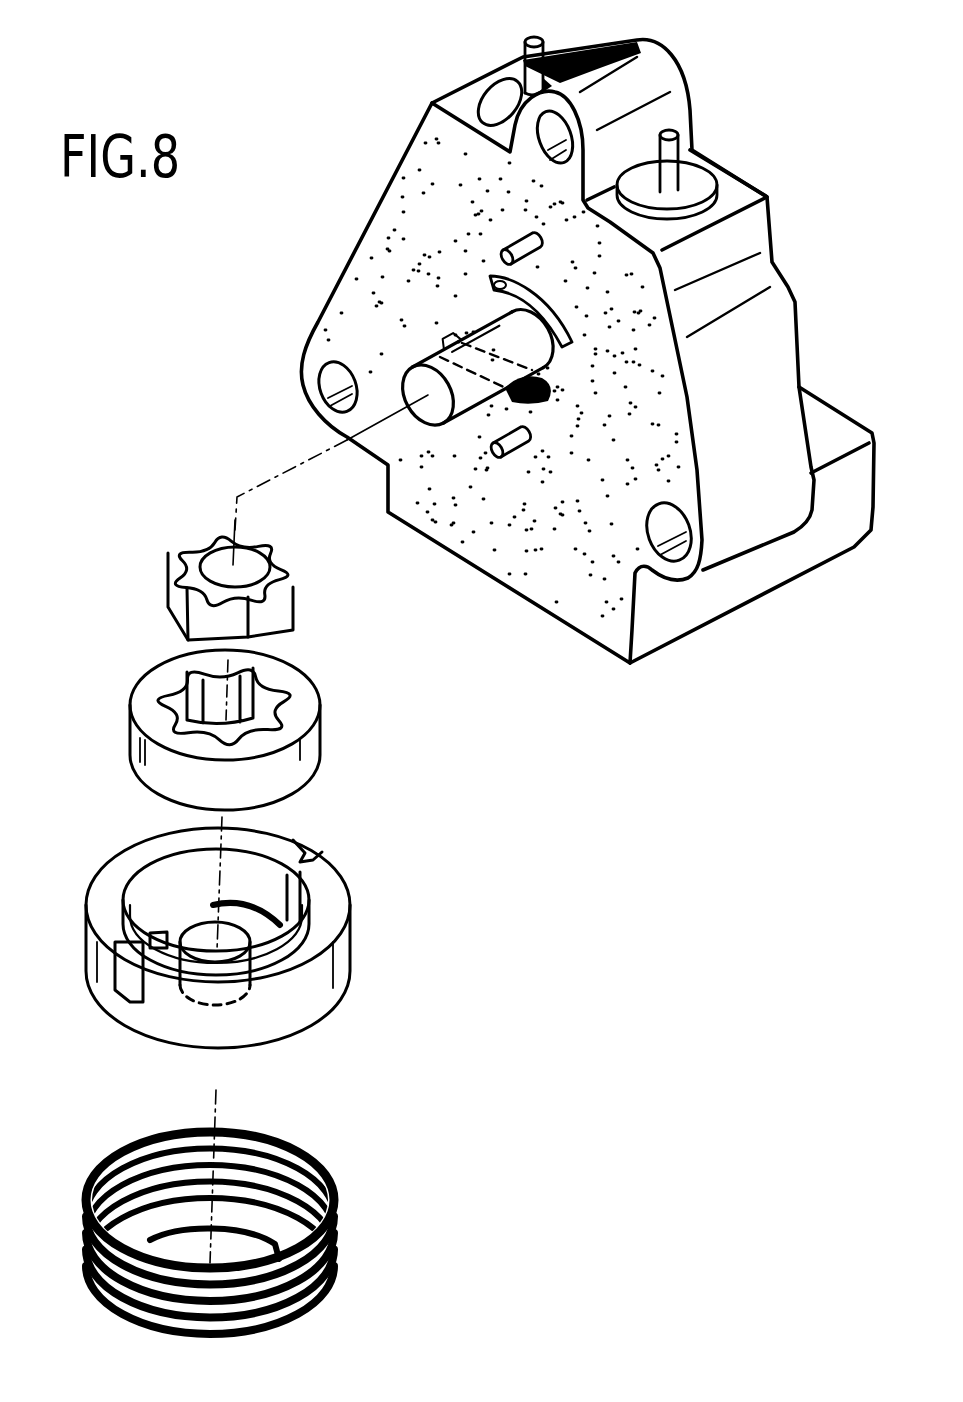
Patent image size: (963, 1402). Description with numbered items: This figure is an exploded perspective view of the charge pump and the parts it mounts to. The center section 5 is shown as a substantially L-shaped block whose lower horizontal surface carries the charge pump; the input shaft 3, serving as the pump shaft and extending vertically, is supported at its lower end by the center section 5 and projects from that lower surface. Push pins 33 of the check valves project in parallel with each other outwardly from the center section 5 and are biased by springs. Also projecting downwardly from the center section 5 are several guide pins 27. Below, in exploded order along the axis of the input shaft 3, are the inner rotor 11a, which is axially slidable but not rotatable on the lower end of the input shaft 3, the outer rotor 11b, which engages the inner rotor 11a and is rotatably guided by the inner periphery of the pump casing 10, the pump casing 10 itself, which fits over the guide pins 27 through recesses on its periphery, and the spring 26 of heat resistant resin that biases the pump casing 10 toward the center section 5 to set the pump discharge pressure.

The input shaft 3 is at (428, 395).
The center section 5 is at (700, 610).
The pump casing 10 is at (350, 950).
The inner rotor 11a is at (285, 600).
The outer rotor 11b is at (317, 738).
The spring 26 is at (330, 1190).
The guide pins 27 is at (493, 252).
The push pins 33 is at (530, 42).